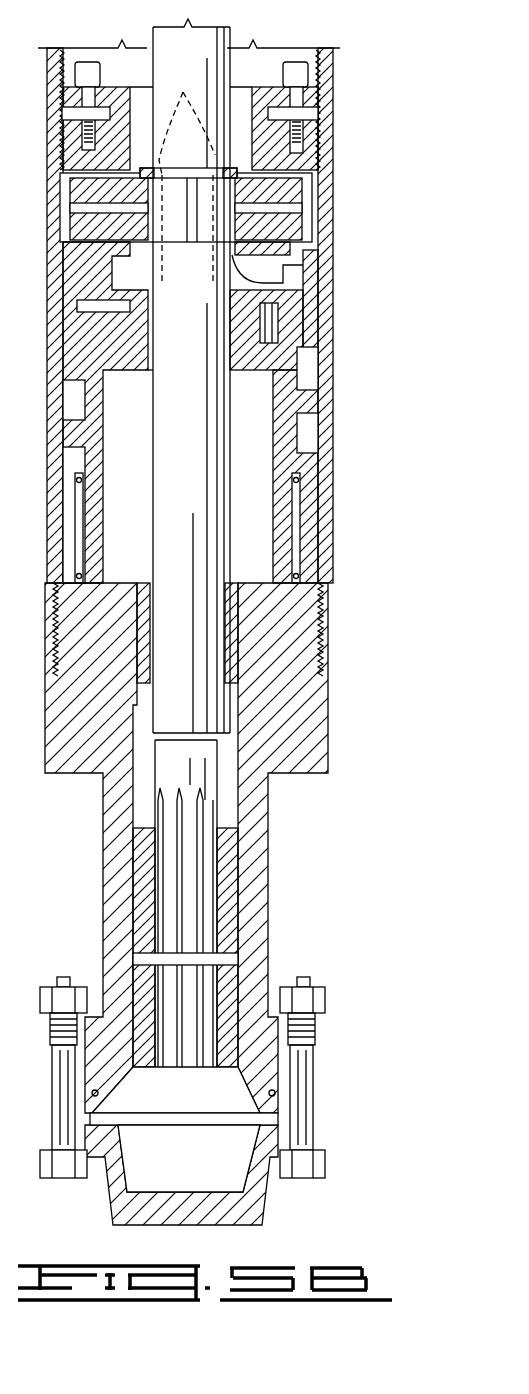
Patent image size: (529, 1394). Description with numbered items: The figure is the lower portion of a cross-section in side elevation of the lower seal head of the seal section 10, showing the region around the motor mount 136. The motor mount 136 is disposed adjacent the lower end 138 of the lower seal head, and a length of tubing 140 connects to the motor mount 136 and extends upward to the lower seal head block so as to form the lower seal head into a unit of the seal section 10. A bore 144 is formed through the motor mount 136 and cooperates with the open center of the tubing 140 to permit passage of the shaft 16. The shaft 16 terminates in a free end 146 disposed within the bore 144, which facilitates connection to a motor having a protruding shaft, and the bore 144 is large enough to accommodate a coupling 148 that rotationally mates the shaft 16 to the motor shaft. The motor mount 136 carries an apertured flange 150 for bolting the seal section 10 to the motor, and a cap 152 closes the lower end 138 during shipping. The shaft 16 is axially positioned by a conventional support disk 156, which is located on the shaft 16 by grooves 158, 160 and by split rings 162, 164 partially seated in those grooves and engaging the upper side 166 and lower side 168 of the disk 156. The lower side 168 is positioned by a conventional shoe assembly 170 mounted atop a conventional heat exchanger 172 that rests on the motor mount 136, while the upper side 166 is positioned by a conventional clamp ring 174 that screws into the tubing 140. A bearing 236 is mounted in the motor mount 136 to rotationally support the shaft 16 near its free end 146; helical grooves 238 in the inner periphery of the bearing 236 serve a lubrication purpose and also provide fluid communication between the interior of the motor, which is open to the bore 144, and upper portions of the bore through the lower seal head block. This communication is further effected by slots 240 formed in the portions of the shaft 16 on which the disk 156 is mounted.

The seal section 10 is at (40, 326).
The shaft 16 is at (192, 459).
The motor mount 136 is at (260, 838).
The lower end 138 is at (258, 1125).
The tubing 140 is at (328, 362).
The bore 144 is at (140, 790).
The free end 146 is at (205, 938).
The coupling 148 is at (226, 977).
The apertured flange 150 is at (325, 1030).
The cap 152 is at (262, 1188).
The support disk 156 is at (293, 197).
The groove 158 is at (173, 245).
The groove 160 is at (176, 175).
The split ring 162 is at (265, 278).
The split ring 164 is at (237, 176).
The upper side 166 is at (302, 174).
The lower side 168 is at (308, 249).
The shoe assembly 170 is at (316, 305).
The heat exchanger 172 is at (314, 402).
The clamp ring 174 is at (322, 147).
The bearing 236 is at (238, 630).
The helical grooves 238 is at (205, 596).
The slots 240 is at (187, 174).